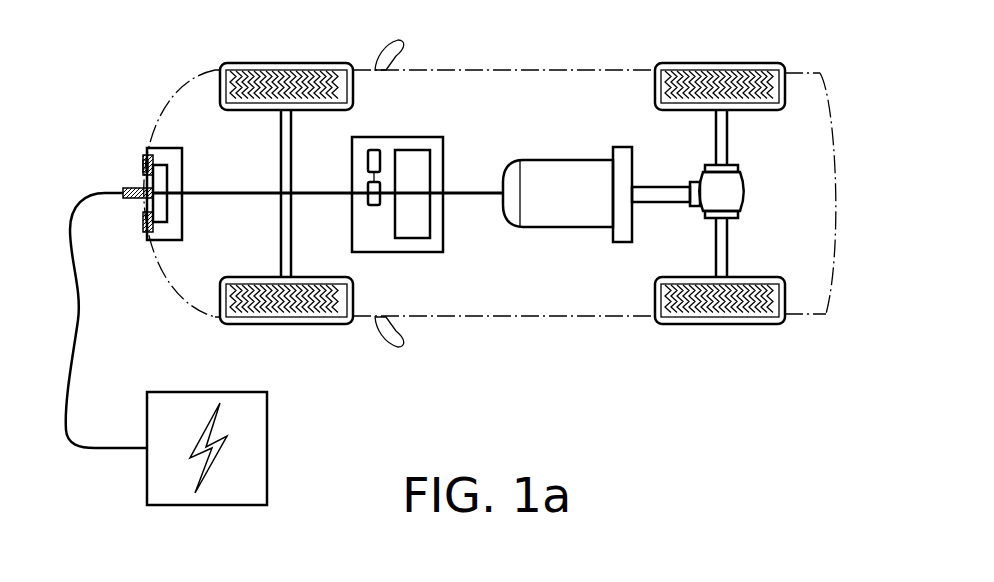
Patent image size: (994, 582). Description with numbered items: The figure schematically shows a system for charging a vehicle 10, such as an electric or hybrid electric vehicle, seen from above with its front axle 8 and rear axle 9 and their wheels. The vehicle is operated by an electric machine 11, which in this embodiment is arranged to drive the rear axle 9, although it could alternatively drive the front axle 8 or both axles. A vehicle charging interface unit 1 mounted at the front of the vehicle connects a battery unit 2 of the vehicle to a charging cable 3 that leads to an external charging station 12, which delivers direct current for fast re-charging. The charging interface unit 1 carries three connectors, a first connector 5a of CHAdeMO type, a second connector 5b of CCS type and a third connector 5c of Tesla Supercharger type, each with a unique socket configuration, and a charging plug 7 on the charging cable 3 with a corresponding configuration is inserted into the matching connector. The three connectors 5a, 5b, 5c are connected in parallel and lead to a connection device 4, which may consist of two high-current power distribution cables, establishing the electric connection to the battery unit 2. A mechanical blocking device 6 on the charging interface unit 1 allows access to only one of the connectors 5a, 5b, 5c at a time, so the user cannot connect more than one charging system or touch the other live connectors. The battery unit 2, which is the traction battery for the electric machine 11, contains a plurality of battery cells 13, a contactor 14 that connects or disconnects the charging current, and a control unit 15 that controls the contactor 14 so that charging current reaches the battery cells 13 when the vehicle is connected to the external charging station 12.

The vehicle charging interface unit 1 is at (151, 148).
The battery unit 2 is at (412, 137).
The charging cable 3 is at (73, 362).
The connection device 4 is at (213, 196).
The first connector 5a is at (150, 233).
The second connector 5b is at (158, 223).
The third connector 5c is at (146, 154).
The mechanical blocking device 6 is at (141, 167).
The charging plug 7 is at (125, 190).
The front axle 8 is at (278, 152).
The rear axle 9 is at (729, 140).
The vehicle 10 is at (500, 318).
The electric machine 11 is at (575, 228).
The external charging station 12 is at (267, 448).
The battery cells 13 is at (410, 240).
The contactor 14 is at (371, 207).
The control unit 15 is at (372, 150).